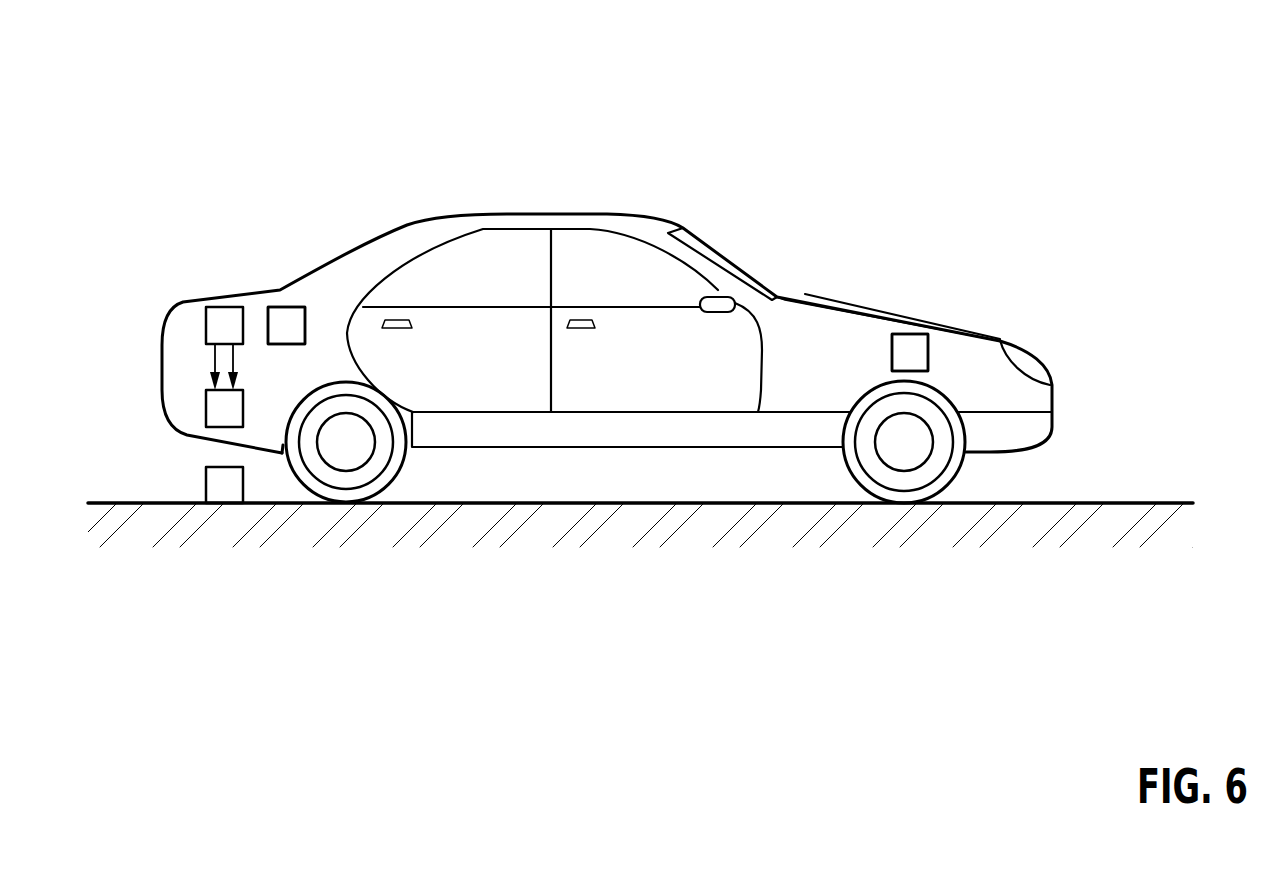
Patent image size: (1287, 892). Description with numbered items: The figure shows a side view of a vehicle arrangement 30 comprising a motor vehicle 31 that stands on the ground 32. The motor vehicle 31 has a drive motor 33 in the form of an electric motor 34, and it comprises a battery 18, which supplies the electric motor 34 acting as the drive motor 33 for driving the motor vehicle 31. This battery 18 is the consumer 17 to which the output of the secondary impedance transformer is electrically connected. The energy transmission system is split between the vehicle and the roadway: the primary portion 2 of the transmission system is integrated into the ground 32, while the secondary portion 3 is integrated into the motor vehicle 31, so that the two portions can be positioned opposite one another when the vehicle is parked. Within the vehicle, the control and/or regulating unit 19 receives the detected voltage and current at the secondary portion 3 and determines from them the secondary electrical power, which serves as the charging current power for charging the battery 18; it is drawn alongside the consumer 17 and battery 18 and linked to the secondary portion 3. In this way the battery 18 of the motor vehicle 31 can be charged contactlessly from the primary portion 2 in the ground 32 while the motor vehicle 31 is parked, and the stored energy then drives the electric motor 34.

The primary portion 2 is at (206, 485).
The secondary portion 3 is at (206, 403).
The consumer 17 is at (283, 307).
The battery 18 is at (286, 325).
The control and/or regulating unit 19 is at (225, 307).
The vehicle arrangement 30 is at (1063, 90).
The motor vehicle 31 is at (775, 280).
The ground 32 is at (1138, 503).
The drive motor 33 is at (908, 334).
The electric motor 34 is at (910, 352).